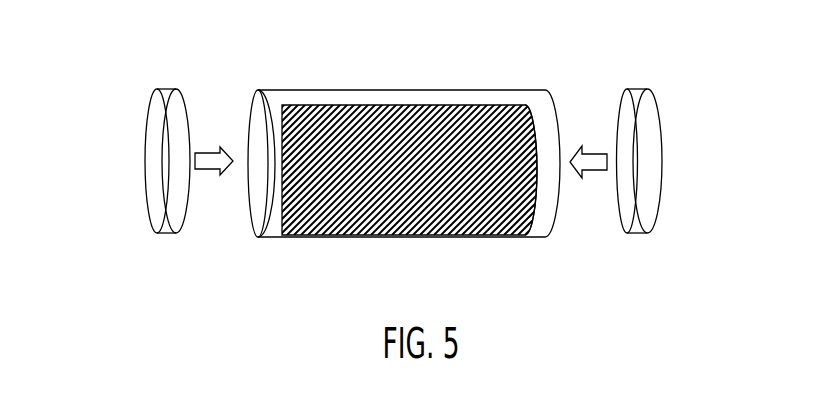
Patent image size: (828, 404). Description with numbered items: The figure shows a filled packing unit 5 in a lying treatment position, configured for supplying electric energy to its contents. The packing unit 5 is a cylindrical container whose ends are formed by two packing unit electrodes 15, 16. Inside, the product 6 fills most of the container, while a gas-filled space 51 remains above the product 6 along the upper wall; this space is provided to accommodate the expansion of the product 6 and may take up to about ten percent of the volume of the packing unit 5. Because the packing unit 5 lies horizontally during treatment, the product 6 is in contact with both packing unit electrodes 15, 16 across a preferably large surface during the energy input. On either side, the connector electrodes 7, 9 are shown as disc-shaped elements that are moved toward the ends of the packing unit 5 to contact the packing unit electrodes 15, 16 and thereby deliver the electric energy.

The packing unit 5 is at (406, 152).
The gas-filled space 51 is at (432, 90).
The product 6 is at (480, 208).
The connector electrode 7 is at (163, 88).
The connector electrode 9 is at (644, 88).
The packing unit electrode 15 is at (270, 90).
The packing unit electrode 16 is at (548, 90).